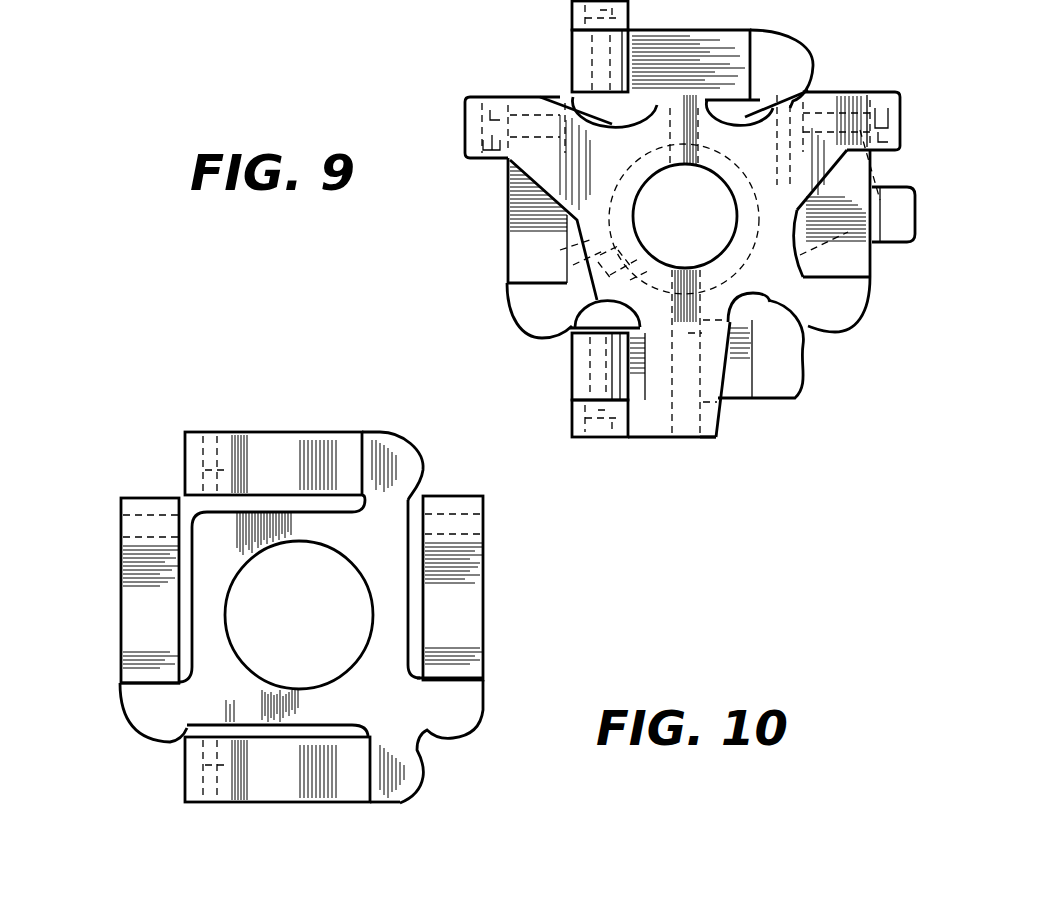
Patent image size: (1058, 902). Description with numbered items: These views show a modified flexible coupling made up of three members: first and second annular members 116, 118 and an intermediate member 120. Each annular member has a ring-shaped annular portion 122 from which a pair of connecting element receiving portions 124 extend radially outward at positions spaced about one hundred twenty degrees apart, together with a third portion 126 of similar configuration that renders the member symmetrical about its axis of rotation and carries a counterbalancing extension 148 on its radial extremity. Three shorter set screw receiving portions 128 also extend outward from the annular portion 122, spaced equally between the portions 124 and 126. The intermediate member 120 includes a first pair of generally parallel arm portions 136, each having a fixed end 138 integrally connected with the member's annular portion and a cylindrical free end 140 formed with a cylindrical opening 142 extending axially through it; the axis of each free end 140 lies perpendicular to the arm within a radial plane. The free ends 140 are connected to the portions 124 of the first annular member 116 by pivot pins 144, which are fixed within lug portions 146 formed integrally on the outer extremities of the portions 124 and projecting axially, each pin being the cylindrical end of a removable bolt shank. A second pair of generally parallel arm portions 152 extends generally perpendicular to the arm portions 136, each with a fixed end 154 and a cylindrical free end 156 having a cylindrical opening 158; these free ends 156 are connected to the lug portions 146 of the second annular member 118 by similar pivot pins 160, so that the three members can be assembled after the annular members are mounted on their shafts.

In FIG. 9, the first annular member 116 is at (881, 285).
In FIG. 9, the second annular member 118 is at (734, 443).
In FIG. 9, the intermediate member 120 is at (822, 53).
In FIG. 10, the intermediate member 120 is at (458, 447).
In FIG. 9, the ring-shaped annular portion 122 is at (627, 187).
In FIG. 9, the connecting element receiving portion 124 is at (550, 170).
In FIG. 9, the third portion 126 is at (735, 392).
In FIG. 9, the set screw receiving portion 128 is at (568, 337).
In FIG. 9, the first pair of arm portions 136 is at (708, 40).
In FIG. 10, the first pair of arm portions 136 is at (330, 447).
In FIG. 9, the fixed end 138 is at (782, 45).
In FIG. 10, the fixed end 138 is at (405, 417).
In FIG. 9, the free end 140 is at (583, 73).
In FIG. 10, the free end 140 is at (185, 451).
In FIG. 10, the cylindrical opening 142 is at (210, 426).
In FIG. 9, the pivot pin 144 is at (566, 11).
In FIG. 9, the lug portion 146 is at (903, 86).
In FIG. 9, the counterbalancing extension 148 is at (900, 240).
In FIG. 9, the second pair of arm portions 152 is at (520, 238).
In FIG. 10, the second pair of arm portions 152 is at (125, 612).
In FIG. 9, the fixed end 154 is at (528, 300).
In FIG. 10, the fixed end 154 is at (142, 698).
In FIG. 10, the free end 156 is at (123, 506).
In FIG. 10, the cylindrical opening 158 is at (123, 537).
In FIG. 9, the pivot pin 160 is at (462, 130).